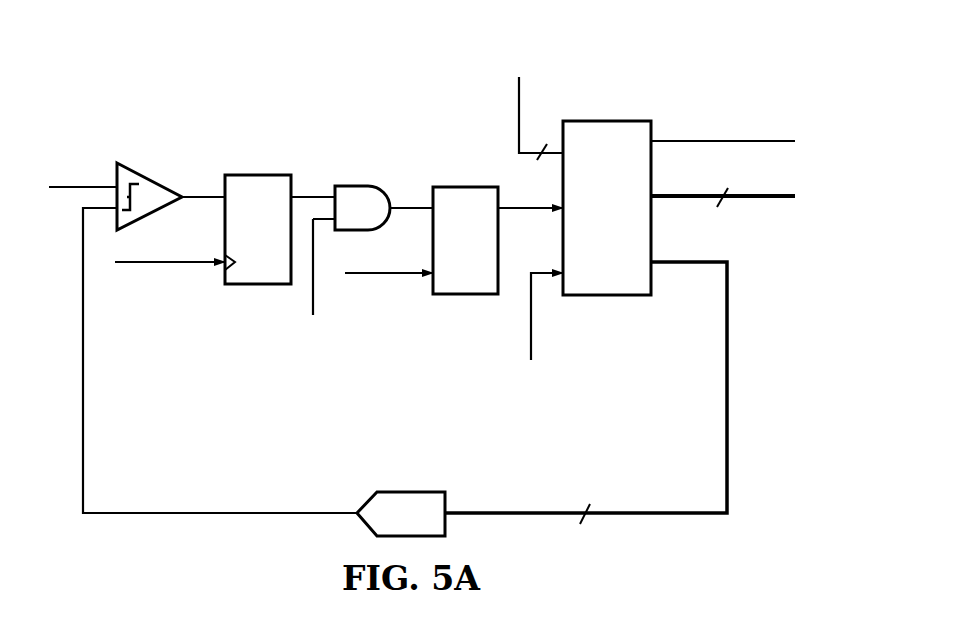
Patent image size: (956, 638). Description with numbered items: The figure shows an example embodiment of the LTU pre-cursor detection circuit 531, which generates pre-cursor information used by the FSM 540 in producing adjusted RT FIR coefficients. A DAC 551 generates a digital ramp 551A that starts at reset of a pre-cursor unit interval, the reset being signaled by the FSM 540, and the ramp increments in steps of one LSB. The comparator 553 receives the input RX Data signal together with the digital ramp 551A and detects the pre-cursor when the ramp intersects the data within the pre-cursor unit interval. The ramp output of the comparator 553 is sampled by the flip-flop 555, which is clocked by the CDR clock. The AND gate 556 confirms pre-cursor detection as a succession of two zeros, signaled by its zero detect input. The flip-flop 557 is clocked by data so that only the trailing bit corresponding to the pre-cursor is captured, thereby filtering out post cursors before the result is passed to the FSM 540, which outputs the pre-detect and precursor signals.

The pre-cursor detection circuit 531 is at (280, 75).
The comparator 553 is at (151, 178).
The flip-flop 555 is at (257, 175).
The AND gate 556 is at (349, 186).
The flip-flop 557 is at (466, 187).
The FSM 540 is at (606, 121).
The DAC 551 is at (412, 492).
The digital ramp 551A is at (232, 515).